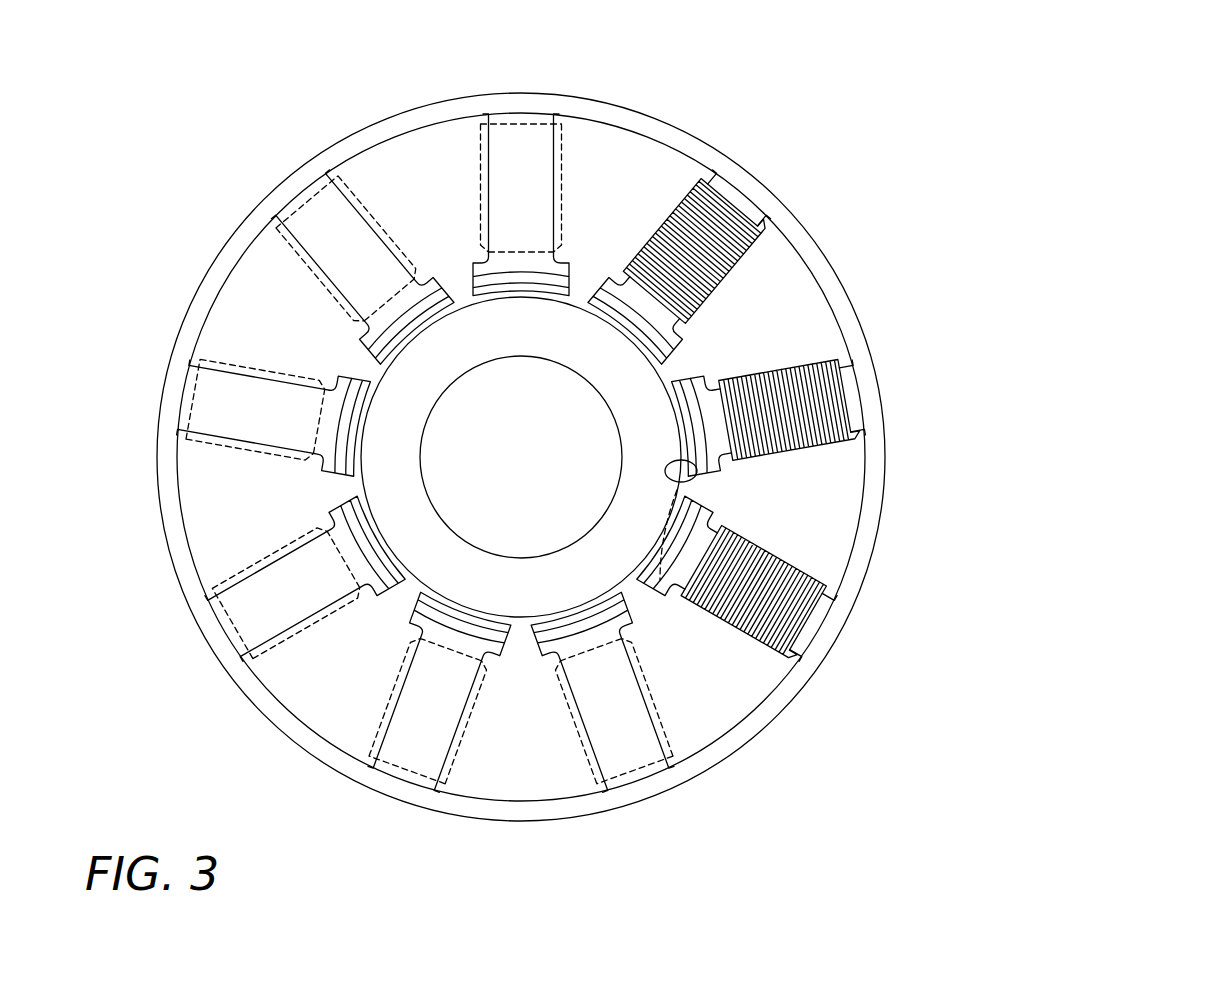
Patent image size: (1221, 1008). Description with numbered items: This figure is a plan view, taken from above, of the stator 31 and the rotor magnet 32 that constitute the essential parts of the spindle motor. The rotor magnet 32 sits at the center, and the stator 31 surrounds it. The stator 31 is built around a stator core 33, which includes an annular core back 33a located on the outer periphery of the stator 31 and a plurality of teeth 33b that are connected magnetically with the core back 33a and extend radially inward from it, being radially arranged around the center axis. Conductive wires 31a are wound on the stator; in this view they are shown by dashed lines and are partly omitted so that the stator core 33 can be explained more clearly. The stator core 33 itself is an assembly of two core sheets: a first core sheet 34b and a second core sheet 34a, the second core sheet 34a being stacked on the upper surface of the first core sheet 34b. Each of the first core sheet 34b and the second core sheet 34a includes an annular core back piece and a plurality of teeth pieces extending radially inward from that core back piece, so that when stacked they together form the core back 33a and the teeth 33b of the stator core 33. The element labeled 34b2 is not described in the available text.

The stator 31 is at (689, 438).
The conductive wires 31a is at (837, 575).
The rotor magnet 32 is at (600, 377).
The stator core 33 is at (631, 438).
The core back 33a is at (602, 113).
The teeth 33b is at (522, 215).
The second core sheet 34a is at (678, 333).
The first core sheet 34b is at (694, 408).
The coil end portion 34b2 is at (697, 470).